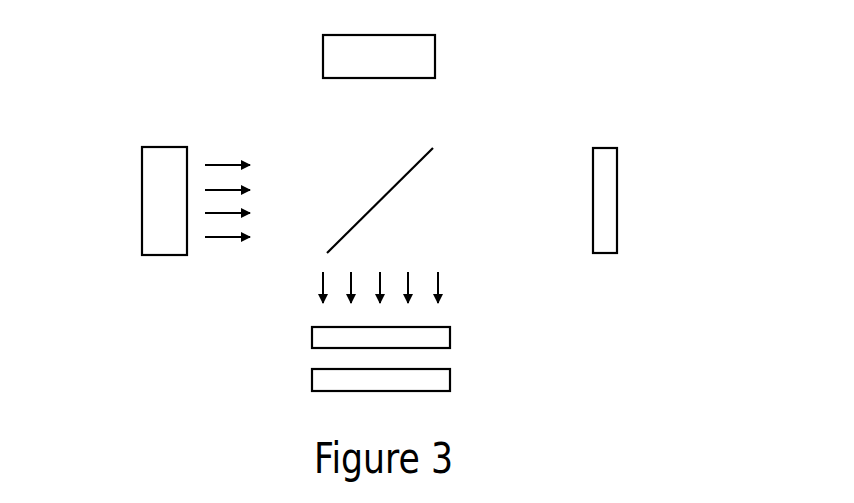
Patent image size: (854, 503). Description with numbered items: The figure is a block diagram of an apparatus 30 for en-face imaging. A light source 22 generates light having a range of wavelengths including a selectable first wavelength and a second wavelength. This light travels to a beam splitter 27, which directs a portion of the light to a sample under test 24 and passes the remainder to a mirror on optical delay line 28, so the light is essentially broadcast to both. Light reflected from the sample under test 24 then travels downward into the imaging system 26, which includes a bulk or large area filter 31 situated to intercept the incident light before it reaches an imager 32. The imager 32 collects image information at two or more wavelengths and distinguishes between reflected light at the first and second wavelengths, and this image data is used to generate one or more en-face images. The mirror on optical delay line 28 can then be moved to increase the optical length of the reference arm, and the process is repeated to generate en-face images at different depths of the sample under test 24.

The apparatus 30 is at (164, 65).
The light source 22 is at (162, 242).
The sample under test 24 is at (420, 57).
The beam splitter 27 is at (412, 160).
The mirror on optical delay line 28 is at (608, 175).
The filter 31 is at (435, 341).
The imager 32 is at (435, 385).
The imaging system 26 is at (507, 366).